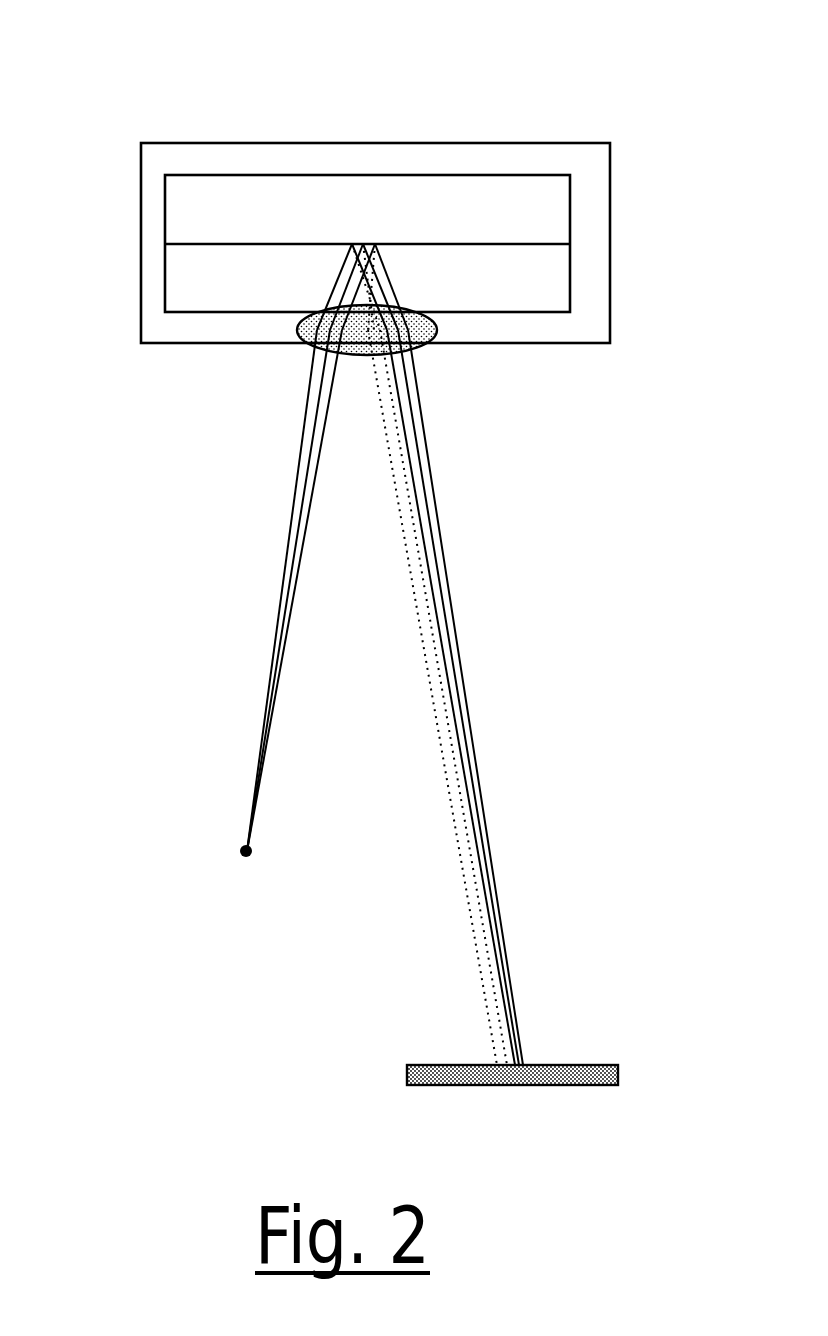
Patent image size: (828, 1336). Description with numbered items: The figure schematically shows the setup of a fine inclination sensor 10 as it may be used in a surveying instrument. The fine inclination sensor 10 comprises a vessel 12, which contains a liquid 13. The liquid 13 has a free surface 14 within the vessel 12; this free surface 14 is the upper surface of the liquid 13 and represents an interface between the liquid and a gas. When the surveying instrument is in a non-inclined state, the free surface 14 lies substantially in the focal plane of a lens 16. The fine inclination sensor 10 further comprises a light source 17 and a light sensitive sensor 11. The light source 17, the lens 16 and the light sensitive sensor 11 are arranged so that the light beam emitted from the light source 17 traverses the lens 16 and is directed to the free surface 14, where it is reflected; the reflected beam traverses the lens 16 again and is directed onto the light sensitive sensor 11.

The fine inclination sensor 10 is at (455, 113).
The light sensitive sensor 11 is at (553, 1065).
The vessel 12 is at (612, 234).
The liquid 13 is at (195, 272).
The free surface 14 is at (479, 242).
The lens 16 is at (430, 343).
The light source 17 is at (233, 853).